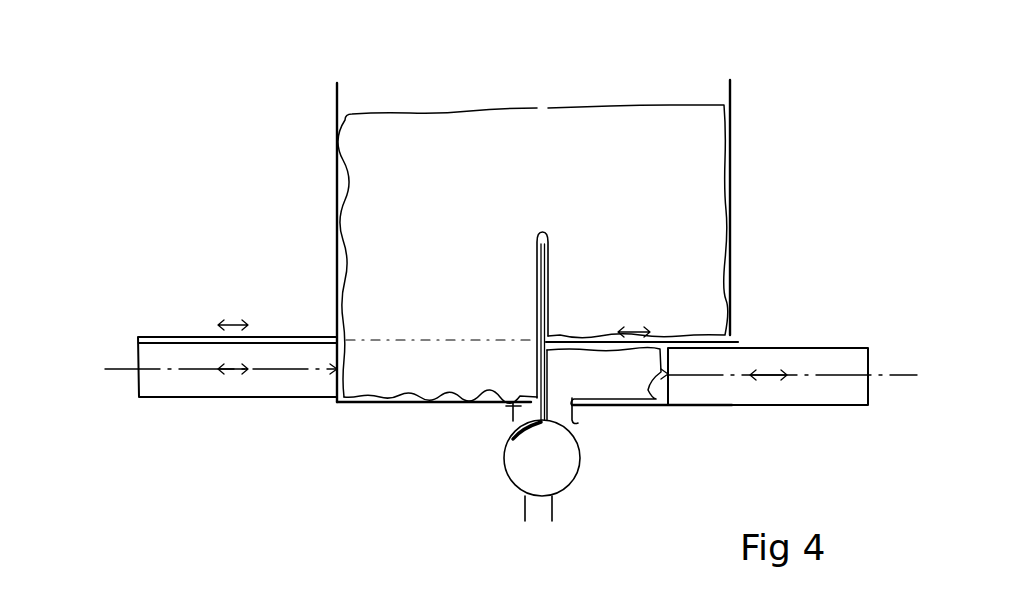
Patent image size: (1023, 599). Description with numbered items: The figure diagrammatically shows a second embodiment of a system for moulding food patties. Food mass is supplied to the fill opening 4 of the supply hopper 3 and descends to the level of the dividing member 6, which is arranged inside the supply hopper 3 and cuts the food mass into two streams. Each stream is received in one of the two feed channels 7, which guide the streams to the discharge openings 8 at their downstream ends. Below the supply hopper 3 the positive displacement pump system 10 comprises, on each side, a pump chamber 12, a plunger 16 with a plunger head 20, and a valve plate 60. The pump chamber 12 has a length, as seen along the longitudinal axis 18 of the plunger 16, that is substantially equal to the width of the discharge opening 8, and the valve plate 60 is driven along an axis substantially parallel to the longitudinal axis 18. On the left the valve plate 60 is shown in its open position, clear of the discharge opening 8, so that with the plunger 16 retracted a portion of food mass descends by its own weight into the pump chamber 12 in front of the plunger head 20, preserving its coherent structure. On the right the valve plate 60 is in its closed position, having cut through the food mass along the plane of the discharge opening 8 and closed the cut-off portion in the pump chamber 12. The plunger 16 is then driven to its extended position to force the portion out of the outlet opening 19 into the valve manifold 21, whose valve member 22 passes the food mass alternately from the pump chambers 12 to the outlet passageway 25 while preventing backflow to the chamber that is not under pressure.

The supply hopper 3 is at (749, 181).
The fill opening 4 is at (699, 86).
The dividing member 6 is at (548, 240).
The feed channel 7 is at (340, 292).
The discharge opening 8 is at (424, 346).
The positive displacement pump system 10 is at (863, 321).
The pump chamber 12 is at (372, 376).
The plunger 16 is at (209, 394).
The longitudinal axis 18 is at (122, 368).
The outlet opening 19 is at (512, 416).
The plunger head 20 is at (346, 375).
The valve manifold 21 is at (530, 470).
The valve member 22 is at (528, 433).
The outlet passageway 25 is at (545, 507).
The valve plate 60 is at (175, 337).